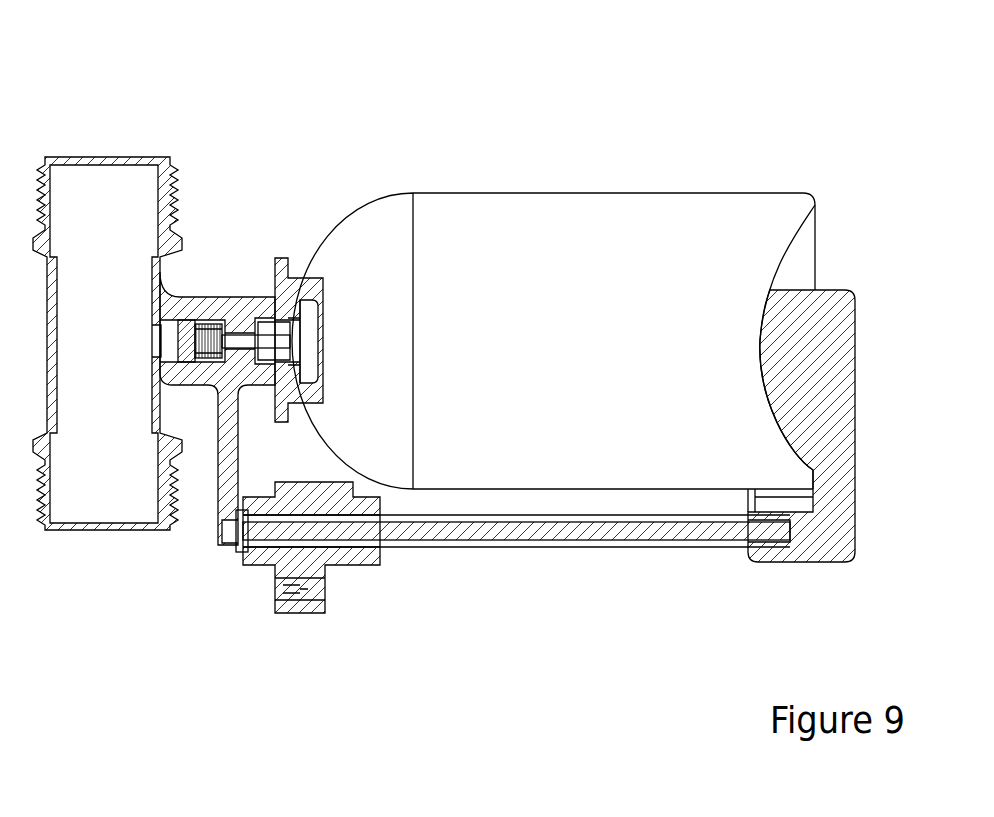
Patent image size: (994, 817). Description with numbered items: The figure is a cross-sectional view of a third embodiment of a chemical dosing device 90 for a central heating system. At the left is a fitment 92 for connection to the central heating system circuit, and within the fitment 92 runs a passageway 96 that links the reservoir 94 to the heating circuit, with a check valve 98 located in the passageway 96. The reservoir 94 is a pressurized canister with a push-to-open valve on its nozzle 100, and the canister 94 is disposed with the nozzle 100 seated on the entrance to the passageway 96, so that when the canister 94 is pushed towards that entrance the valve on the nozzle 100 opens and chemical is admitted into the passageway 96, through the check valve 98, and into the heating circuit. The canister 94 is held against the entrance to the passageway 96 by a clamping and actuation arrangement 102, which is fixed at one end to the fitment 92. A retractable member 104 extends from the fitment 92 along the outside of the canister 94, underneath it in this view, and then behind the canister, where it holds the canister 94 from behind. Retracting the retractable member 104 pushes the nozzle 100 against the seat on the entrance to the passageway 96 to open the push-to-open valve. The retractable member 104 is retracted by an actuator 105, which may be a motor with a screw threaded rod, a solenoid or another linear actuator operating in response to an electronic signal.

The chemical dosing device 90 is at (771, 134).
The fitment 92 is at (97, 185).
The reservoir 94 is at (436, 466).
The passageway 96 is at (161, 342).
The check valve 98 is at (205, 358).
The nozzle 100 is at (244, 333).
The clamping and actuation arrangement 102 is at (831, 531).
The retractable member 104 is at (616, 531).
The actuator 105 is at (319, 549).